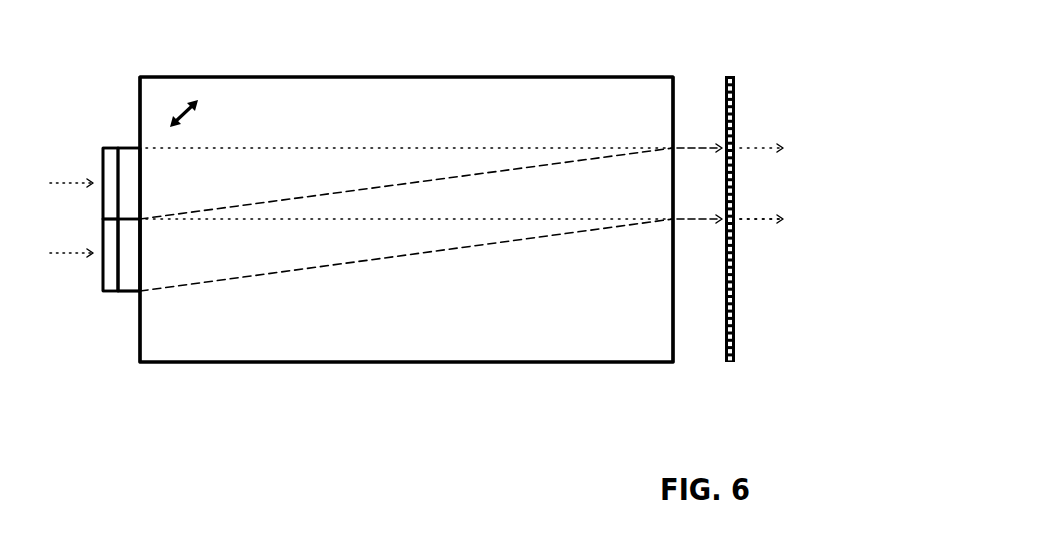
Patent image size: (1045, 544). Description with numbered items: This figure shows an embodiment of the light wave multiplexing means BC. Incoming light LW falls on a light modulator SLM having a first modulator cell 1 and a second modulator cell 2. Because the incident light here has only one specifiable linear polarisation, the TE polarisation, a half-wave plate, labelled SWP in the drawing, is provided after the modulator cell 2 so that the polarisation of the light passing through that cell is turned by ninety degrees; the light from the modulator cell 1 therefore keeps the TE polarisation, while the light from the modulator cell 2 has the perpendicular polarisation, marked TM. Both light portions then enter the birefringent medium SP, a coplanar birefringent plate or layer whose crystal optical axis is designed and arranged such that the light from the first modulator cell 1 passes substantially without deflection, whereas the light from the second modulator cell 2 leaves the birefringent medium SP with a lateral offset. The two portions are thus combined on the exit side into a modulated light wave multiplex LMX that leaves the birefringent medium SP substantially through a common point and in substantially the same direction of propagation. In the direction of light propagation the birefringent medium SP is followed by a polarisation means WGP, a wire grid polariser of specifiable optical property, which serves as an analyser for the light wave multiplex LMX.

The first modulator cell 1 is at (109, 158).
The second modulator cell 2 is at (109, 245).
The spatial light modulator SLM is at (107, 345).
The switchable wave plate (λ/2) SWP is at (128, 331).
The light wave input LW is at (84, 181).
The TE polarisation TE is at (424, 148).
The TM polarized light beam TM is at (445, 298).
The light wave multiplexing means BC is at (593, 54).
The birefringent medium SP is at (406, 219).
The polarisation means (wire grid polariser) WGP is at (737, 355).
The modulated light wave multiplex LMX is at (750, 222).